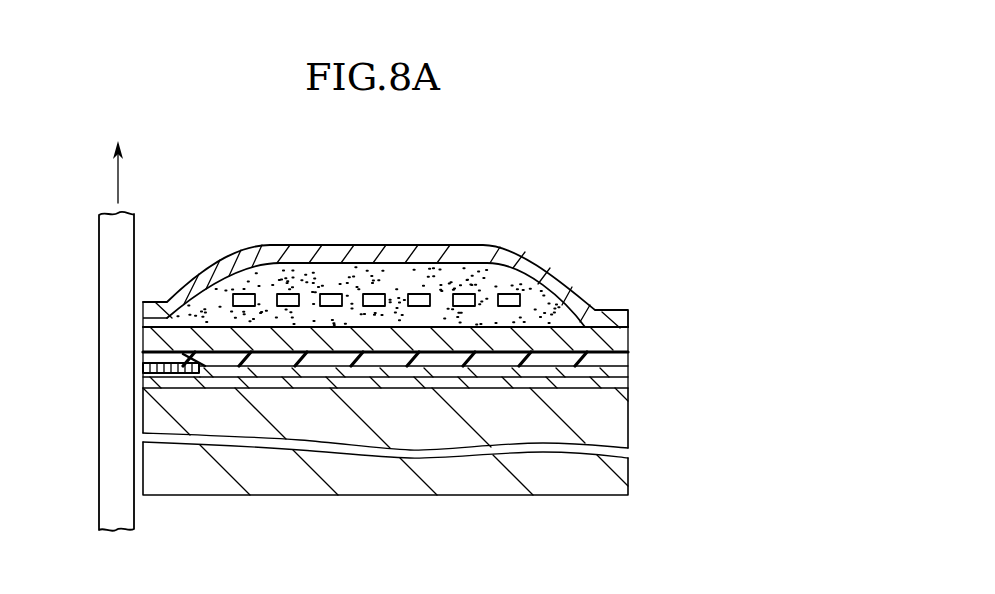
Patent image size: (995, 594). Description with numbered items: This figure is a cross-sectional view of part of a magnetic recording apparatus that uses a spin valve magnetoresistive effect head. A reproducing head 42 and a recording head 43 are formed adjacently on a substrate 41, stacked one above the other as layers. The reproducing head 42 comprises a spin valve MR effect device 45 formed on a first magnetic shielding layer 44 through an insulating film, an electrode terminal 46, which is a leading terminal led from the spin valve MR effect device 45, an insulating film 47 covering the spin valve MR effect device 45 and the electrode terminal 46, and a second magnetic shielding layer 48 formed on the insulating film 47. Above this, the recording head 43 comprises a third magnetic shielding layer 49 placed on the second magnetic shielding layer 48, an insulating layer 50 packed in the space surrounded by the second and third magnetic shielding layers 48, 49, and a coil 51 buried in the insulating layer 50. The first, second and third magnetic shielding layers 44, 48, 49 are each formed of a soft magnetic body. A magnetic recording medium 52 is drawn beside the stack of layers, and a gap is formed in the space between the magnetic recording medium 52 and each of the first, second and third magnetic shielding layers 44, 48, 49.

The substrate 41 is at (620, 435).
The reproducing head 42 is at (423, 440).
The recording head 43 is at (423, 235).
The first magnetic shielding layer 44 is at (383, 368).
The spin valve MR effect device 45 is at (167, 376).
The electrode terminal 46 is at (272, 370).
The insulating film 47 is at (512, 354).
The second magnetic shielding layer 48 is at (598, 338).
The third magnetic shielding layer 49 is at (547, 278).
The insulating layer 50 is at (303, 270).
The coil 51 is at (382, 296).
The magnetic recording medium 52 is at (110, 433).